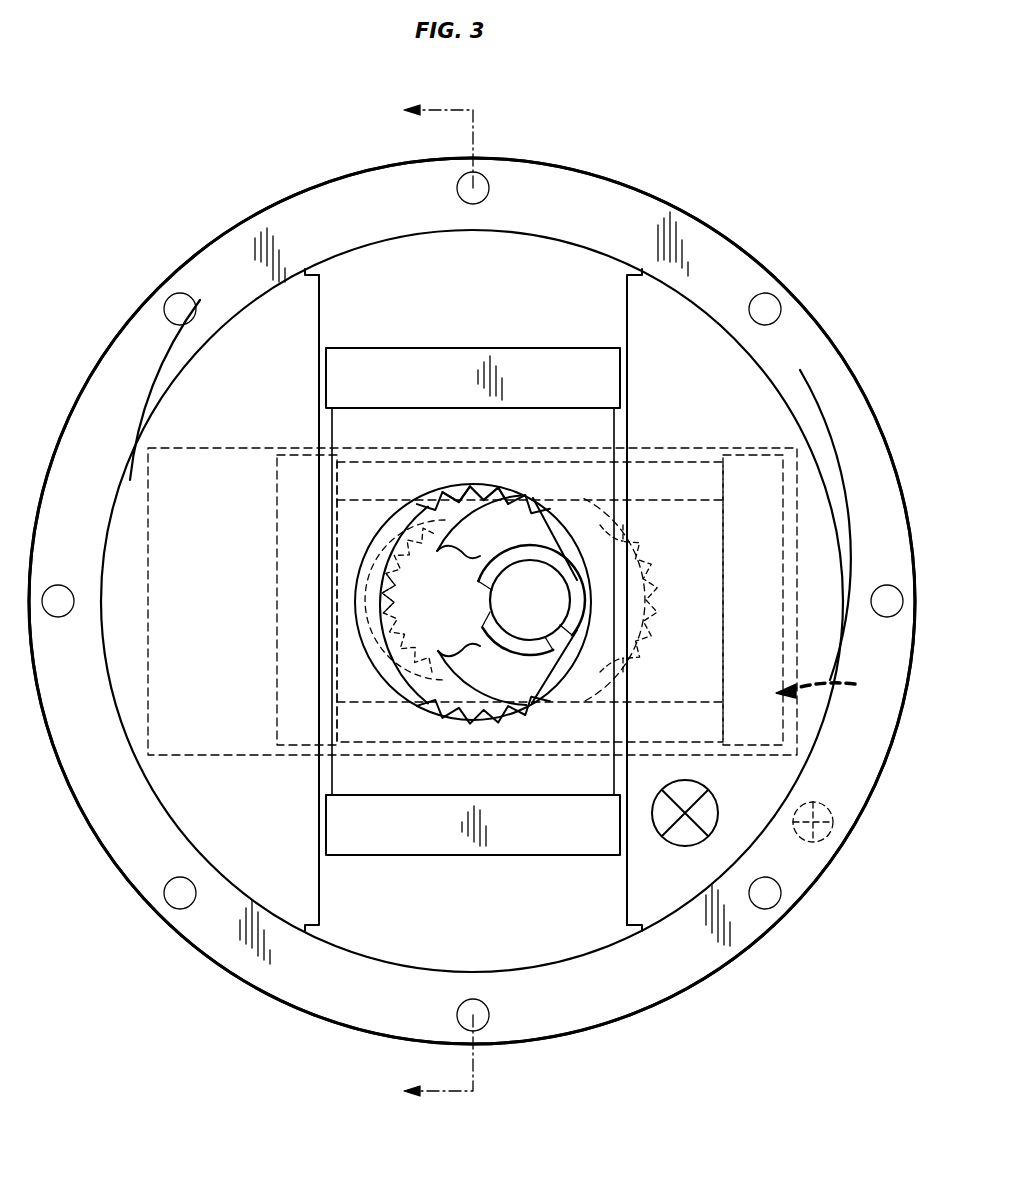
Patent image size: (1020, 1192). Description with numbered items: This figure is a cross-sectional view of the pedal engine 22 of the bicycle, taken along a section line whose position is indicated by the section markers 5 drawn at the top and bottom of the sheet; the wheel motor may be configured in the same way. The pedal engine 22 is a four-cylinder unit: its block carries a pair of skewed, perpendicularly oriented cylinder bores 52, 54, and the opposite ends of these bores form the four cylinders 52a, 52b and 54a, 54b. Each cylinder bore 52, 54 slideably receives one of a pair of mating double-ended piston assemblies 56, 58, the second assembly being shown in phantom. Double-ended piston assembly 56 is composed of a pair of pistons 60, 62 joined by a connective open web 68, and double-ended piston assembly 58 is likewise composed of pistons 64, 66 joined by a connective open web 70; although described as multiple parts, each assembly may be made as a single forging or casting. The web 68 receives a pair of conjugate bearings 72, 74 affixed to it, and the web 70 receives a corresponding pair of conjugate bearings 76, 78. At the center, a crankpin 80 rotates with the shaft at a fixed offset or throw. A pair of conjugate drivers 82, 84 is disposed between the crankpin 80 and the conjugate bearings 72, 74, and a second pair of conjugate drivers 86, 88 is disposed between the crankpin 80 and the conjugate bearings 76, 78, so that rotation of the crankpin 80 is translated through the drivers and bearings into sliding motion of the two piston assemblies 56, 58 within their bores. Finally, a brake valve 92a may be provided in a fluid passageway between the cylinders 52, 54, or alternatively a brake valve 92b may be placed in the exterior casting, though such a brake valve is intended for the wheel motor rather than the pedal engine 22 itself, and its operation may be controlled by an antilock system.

The section line 5- 5 is at (425, 603).
The pedal engine 22 is at (122, 287).
The cylinder bore 52 is at (152, 705).
The cylinder 52a is at (135, 472).
The cylinder 52b is at (808, 605).
The cylinder bore 54 is at (396, 938).
The cylinder 54a is at (503, 250).
The cylinder 54b is at (574, 918).
The double-ended piston assembly 56 is at (410, 852).
The double-ended piston assembly 58 is at (830, 691).
The piston 60 is at (532, 372).
The piston 62 is at (610, 838).
The piston 64 is at (762, 552).
The piston 66 is at (292, 628).
The connective open web 68 is at (356, 770).
The connective open web 70 is at (672, 482).
The conjugate bearing 72 is at (448, 502).
The conjugate bearing 74 is at (525, 700).
The conjugate bearing 76 is at (648, 620).
The conjugate bearing 78 is at (385, 560).
The crankpin 80 is at (538, 583).
The conjugate driver 82 is at (480, 497).
The conjugate driver 84 is at (492, 696).
The conjugate driver 86 is at (654, 578).
The conjugate driver 88 is at (402, 587).
The brake valve 92a is at (705, 800).
The brake valve 92b is at (820, 802).